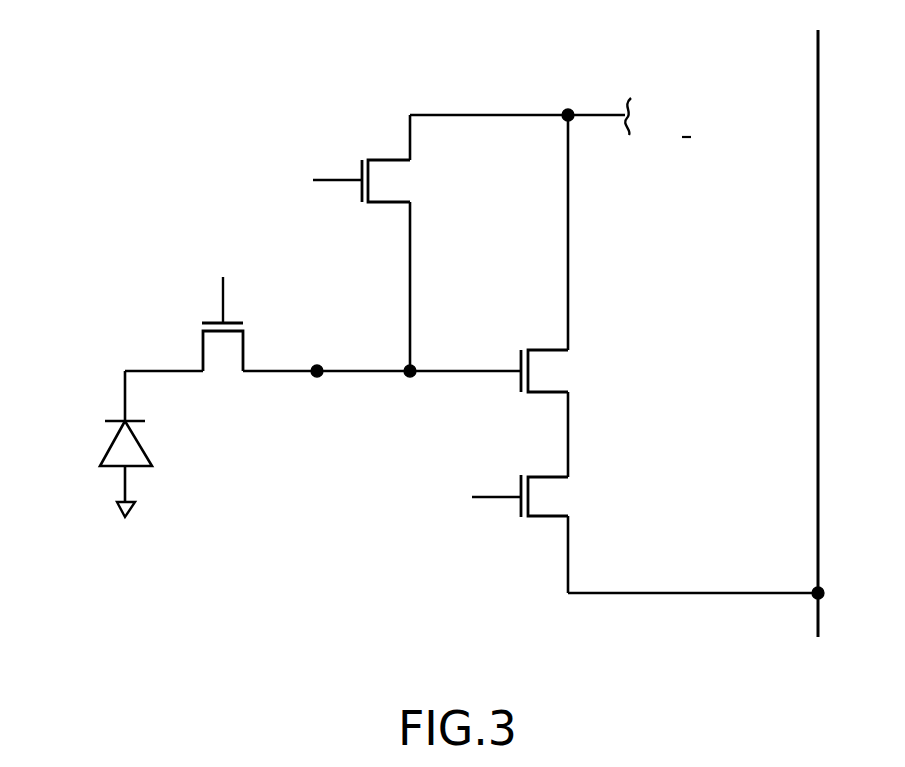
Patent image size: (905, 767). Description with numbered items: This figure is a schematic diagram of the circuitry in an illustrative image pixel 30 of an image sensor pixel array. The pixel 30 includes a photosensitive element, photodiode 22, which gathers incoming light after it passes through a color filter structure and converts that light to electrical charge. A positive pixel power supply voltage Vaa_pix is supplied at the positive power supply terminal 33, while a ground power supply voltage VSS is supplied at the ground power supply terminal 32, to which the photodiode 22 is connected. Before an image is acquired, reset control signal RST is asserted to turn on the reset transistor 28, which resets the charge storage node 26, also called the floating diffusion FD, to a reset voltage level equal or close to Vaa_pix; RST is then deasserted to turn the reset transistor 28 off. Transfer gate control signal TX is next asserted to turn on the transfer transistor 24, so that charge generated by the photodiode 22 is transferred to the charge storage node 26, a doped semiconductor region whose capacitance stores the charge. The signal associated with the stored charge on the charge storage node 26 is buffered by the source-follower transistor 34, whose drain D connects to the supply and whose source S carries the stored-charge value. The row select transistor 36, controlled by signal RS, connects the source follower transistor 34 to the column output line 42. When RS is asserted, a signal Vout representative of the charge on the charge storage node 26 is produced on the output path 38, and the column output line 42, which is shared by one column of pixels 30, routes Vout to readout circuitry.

The image pixel 30 is at (183, 111).
The photodiode 22 is at (113, 441).
The transfer transistor 24 is at (202, 352).
The charge storage node 26 is at (317, 371).
The reset transistor 28 is at (388, 160).
The ground power supply terminal 32 is at (117, 511).
The positive power supply terminal 33 is at (594, 115).
The source-follower transistor 34 is at (547, 350).
The row select transistor 36 is at (547, 517).
The output path 38 is at (668, 593).
The column output line 42 is at (820, 407).